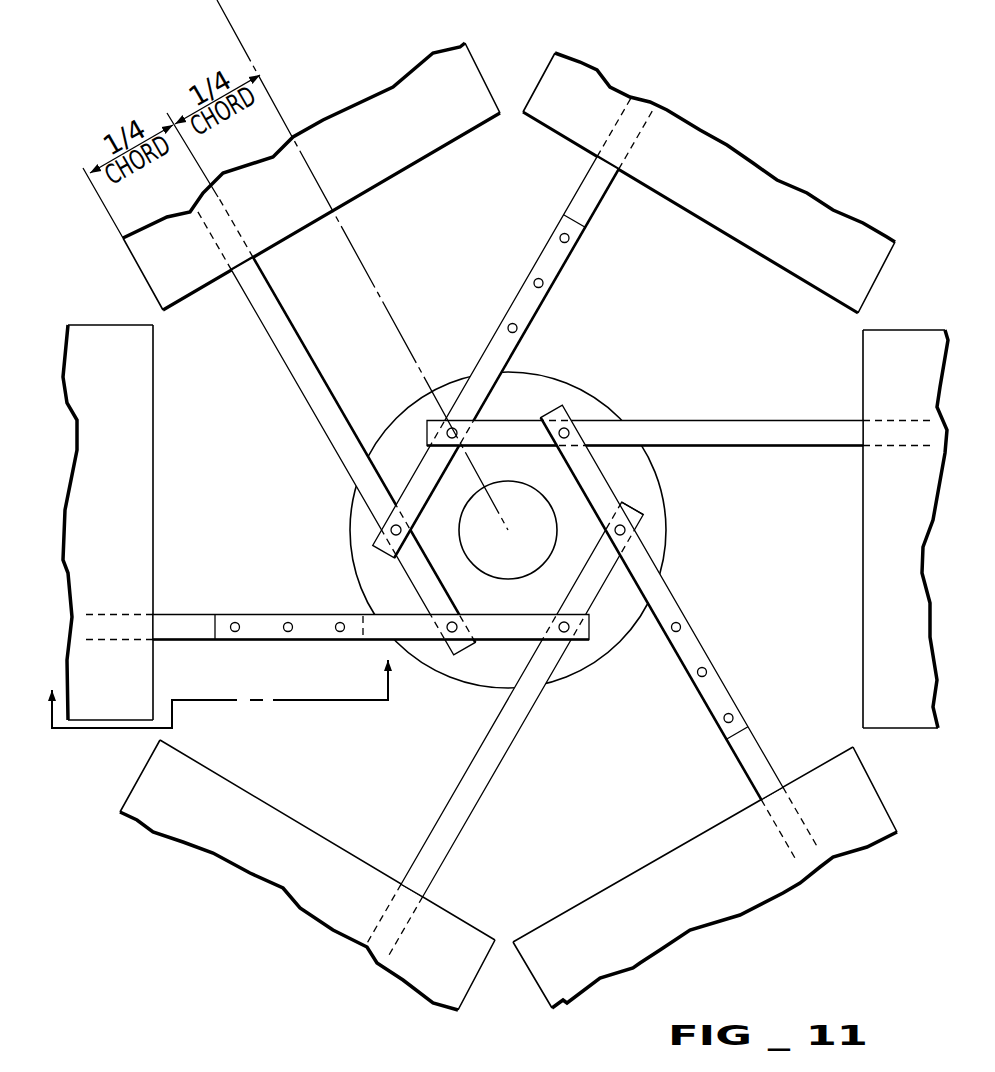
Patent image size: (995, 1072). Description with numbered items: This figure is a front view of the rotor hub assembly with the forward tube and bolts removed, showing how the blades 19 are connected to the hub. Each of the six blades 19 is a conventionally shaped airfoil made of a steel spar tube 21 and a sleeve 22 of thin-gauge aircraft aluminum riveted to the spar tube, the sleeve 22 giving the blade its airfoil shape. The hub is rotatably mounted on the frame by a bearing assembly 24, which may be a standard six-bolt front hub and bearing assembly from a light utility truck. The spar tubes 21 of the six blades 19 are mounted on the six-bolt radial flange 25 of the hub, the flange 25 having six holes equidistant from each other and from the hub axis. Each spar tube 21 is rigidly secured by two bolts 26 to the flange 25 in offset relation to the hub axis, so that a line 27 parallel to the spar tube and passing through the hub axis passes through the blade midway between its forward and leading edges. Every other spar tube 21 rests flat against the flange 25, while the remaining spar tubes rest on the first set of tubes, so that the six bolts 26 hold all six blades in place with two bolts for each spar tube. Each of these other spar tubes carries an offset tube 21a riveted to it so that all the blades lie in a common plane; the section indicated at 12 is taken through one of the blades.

The section line 12- 12 is at (236, 691).
The blade 19 is at (426, 166).
The spar tube 21 is at (588, 204).
The offset tube 21a is at (387, 625).
The sleeve 22 is at (192, 298).
The bearing assembly 24 is at (581, 382).
The six-bolt radial flange 25 is at (652, 500).
The bolt 26 is at (565, 438).
The line 27 is at (392, 313).